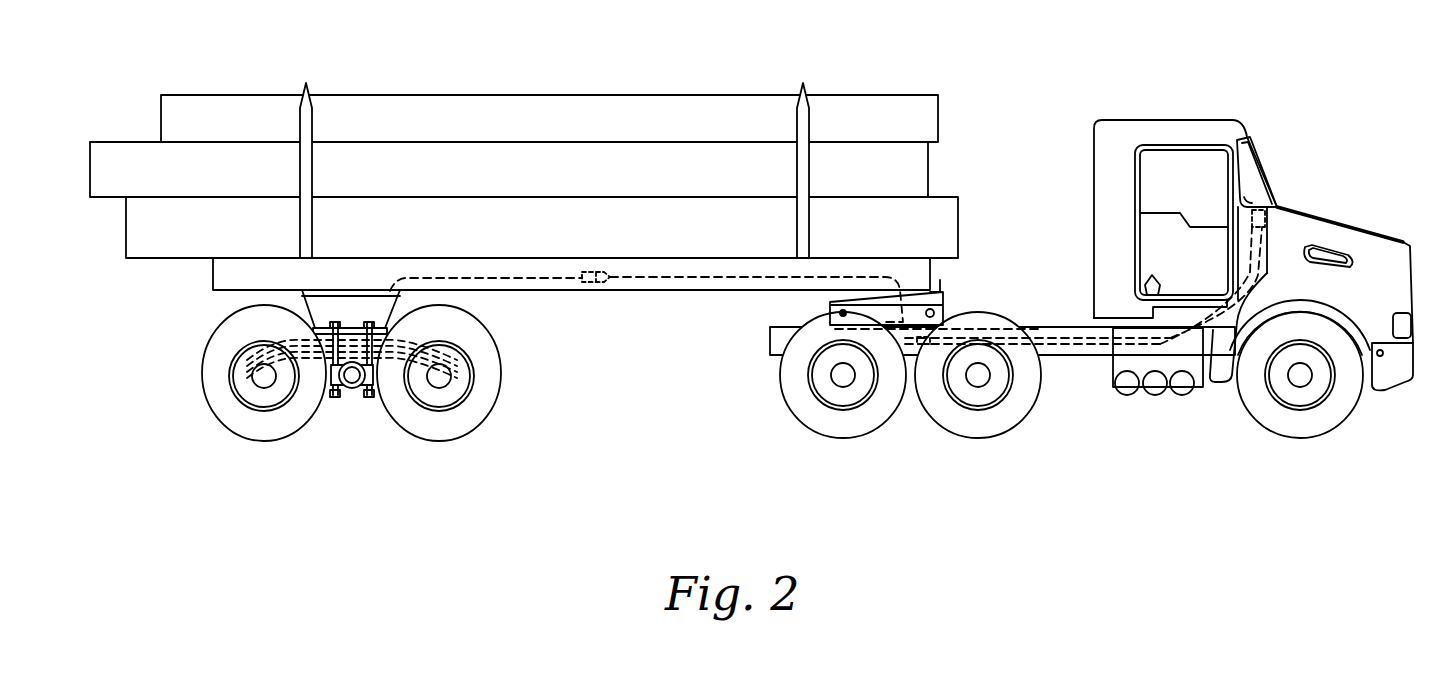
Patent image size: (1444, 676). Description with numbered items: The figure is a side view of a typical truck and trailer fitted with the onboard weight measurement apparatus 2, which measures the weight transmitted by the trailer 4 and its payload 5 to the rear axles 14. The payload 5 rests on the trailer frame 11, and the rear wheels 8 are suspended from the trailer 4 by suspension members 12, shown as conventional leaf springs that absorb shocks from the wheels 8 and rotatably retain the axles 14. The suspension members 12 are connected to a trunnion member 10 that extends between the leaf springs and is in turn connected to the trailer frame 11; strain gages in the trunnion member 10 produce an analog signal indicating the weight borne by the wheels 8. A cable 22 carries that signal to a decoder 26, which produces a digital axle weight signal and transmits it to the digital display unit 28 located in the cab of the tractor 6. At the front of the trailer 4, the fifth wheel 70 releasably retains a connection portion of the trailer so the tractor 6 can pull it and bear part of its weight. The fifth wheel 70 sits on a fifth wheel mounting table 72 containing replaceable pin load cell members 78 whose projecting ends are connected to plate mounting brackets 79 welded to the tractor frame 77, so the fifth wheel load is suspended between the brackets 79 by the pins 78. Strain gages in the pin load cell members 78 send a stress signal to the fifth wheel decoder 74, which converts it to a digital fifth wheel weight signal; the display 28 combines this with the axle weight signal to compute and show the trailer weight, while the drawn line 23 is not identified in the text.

The weight measurement apparatus 2 is at (337, 412).
The trailer 4 is at (933, 283).
The payload 5 is at (560, 95).
The tractor 6 is at (1187, 132).
The rear wheels 8 is at (267, 442).
The trunnion member 10 is at (352, 378).
The trailer frame 11 is at (662, 290).
The suspension members 12 is at (307, 325).
The rear axles 14 is at (263, 390).
The cable 22 is at (528, 282).
The cable 23 is at (883, 322).
The decoder 26 is at (590, 283).
The digital display unit 28 is at (1260, 193).
The fifth wheel 70 is at (830, 301).
The fifth wheel mounting table 72 is at (913, 288).
The fifth wheel decoder 74 is at (932, 342).
The tractor frame 77 is at (1057, 325).
The pin load cell members 78 is at (945, 328).
The plate mounting brackets 79 is at (947, 315).